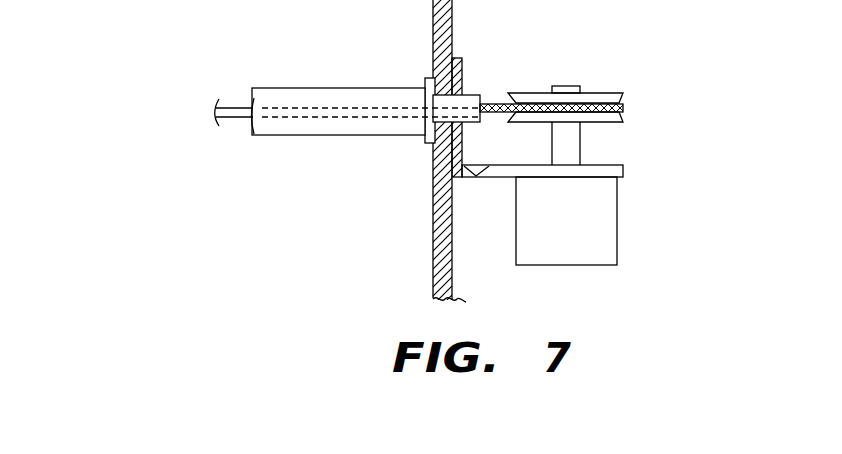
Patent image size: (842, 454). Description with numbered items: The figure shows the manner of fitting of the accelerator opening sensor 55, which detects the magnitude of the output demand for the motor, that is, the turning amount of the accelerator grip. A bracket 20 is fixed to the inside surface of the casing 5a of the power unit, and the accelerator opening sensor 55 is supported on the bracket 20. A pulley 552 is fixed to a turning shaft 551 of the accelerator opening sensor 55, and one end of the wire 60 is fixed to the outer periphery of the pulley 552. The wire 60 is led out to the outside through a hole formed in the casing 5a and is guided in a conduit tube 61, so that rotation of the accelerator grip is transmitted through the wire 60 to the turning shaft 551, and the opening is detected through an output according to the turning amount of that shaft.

The casing 5a is at (443, 232).
The conduit tube 61 is at (340, 136).
The wire 60 is at (492, 104).
The pulley 552 is at (600, 95).
The turning shaft 551 is at (570, 148).
The bracket 20 is at (495, 173).
The accelerator opening sensor 55 is at (598, 231).